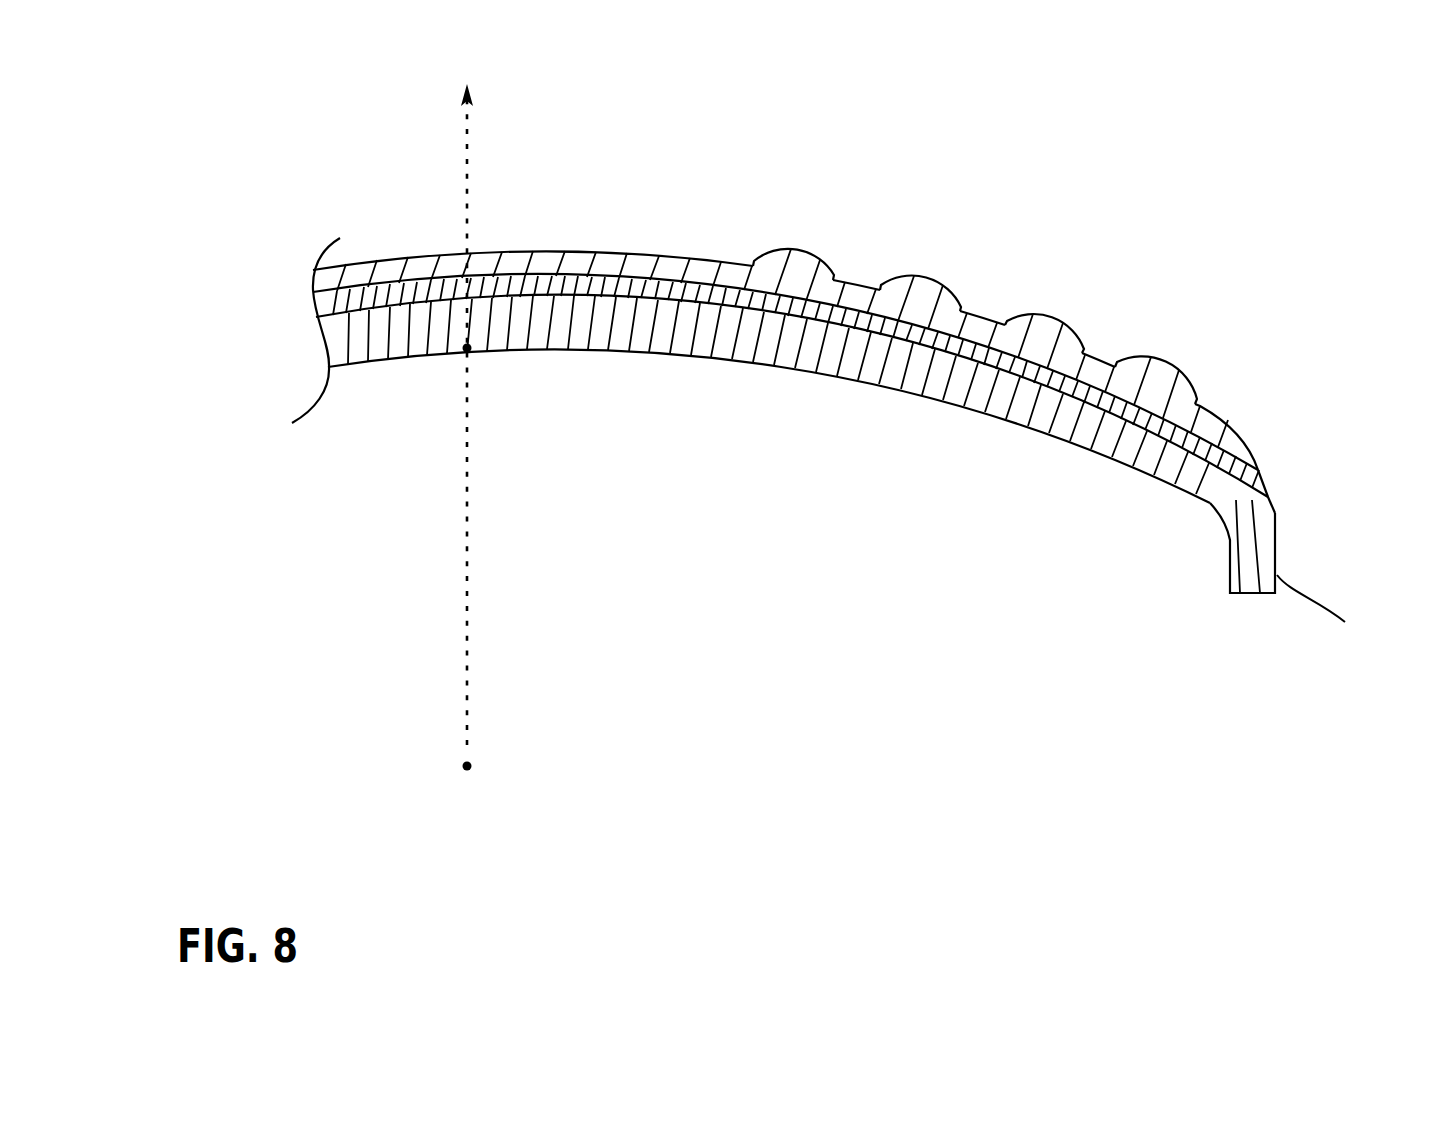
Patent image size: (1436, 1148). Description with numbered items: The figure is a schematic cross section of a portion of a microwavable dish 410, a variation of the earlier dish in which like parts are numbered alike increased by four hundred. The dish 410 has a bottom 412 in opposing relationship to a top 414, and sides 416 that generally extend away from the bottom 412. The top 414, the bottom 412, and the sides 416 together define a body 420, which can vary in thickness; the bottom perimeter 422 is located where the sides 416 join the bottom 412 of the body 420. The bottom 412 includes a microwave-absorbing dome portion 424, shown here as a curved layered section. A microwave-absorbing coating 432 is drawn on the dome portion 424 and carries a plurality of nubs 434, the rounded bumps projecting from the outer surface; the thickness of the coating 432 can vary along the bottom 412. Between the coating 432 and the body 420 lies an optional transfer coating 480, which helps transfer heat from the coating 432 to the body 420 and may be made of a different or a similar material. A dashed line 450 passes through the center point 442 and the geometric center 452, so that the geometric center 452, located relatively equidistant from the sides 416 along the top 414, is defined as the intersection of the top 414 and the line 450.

The microwavable dish 410 is at (843, 422).
The bottom 412 is at (952, 343).
The top 414 is at (942, 414).
The sides 416 is at (1335, 628).
The body 420 is at (1283, 548).
The bottom perimeter 422 is at (1272, 503).
The microwave-absorbing dome portion 424 is at (829, 281).
The microwave-absorbing coating 432 is at (995, 315).
The nubs 434 is at (1173, 361).
The center point 442 is at (467, 766).
The line 450 is at (467, 637).
The geometric center 452 is at (469, 352).
The transfer coating 480 is at (820, 348).